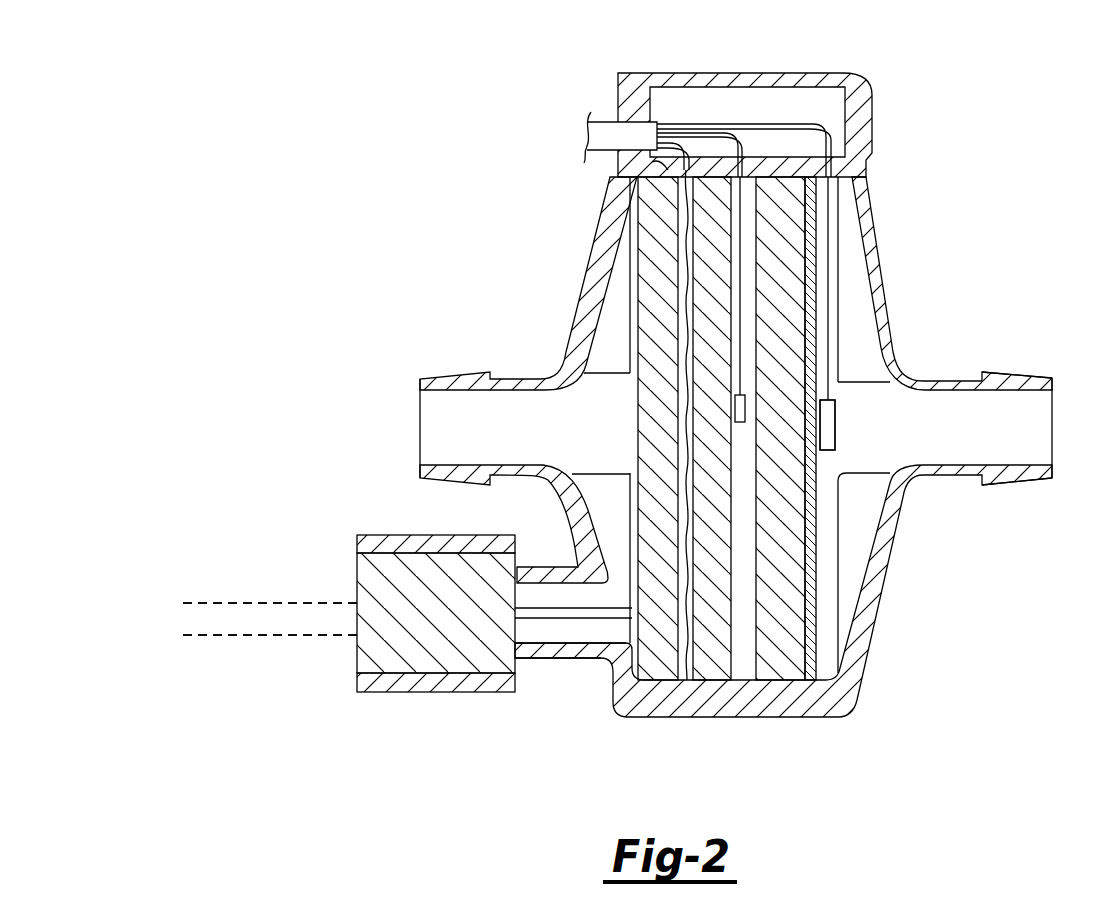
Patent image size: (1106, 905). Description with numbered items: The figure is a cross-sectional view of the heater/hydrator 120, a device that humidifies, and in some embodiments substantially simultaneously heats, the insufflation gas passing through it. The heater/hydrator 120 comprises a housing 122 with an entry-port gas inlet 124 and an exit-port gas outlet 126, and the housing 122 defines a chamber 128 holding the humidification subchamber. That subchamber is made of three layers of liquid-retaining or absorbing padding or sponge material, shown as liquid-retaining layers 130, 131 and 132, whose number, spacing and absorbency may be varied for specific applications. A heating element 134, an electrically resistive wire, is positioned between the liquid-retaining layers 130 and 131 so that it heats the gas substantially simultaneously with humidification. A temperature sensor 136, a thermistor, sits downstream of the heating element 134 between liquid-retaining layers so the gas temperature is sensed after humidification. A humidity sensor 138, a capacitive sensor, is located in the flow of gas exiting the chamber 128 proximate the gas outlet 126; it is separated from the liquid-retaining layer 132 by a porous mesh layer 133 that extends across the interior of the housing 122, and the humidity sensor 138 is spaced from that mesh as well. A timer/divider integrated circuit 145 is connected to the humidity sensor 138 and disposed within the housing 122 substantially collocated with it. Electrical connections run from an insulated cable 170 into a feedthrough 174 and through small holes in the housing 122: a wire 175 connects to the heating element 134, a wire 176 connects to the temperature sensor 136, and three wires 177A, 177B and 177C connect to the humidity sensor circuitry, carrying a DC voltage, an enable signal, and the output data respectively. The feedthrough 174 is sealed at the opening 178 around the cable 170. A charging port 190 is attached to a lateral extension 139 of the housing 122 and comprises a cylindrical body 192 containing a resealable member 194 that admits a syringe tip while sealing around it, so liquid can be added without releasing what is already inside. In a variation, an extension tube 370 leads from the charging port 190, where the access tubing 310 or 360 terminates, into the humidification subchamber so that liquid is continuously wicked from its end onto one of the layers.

The heater/hydrator 120 is at (952, 309).
The housing 122 is at (868, 243).
The gas inlet 124 is at (420, 452).
The gas outlet 126 is at (1062, 440).
The chamber 128 is at (824, 620).
The liquid-retaining layer 130 is at (655, 668).
The liquid-retaining layer 131 is at (720, 657).
The liquid-retaining layer 132 is at (793, 670).
The porous mesh layer 133 is at (817, 587).
The heating element 134 is at (685, 683).
The temperature sensor 136 is at (735, 410).
The humidity sensor 138 is at (836, 427).
The timer/divider integrated circuit 145 is at (827, 425).
The lateral extension 139 is at (580, 627).
The insulated cable 170 is at (603, 133).
The feedthrough 174 is at (858, 82).
The wire 175 is at (638, 177).
The wire 176 is at (703, 133).
The wire 177A is at (828, 100).
The wire 177B is at (699, 264).
The wire 177C is at (673, 156).
The opening 178 is at (618, 165).
The charging port 190 is at (455, 702).
The cylindrical body 192 is at (370, 545).
The resealable member 194 is at (372, 645).
The access tubing 310 is at (273, 638).
The access tubing 360 is at (270, 619).
The extension tube 370 is at (543, 622).